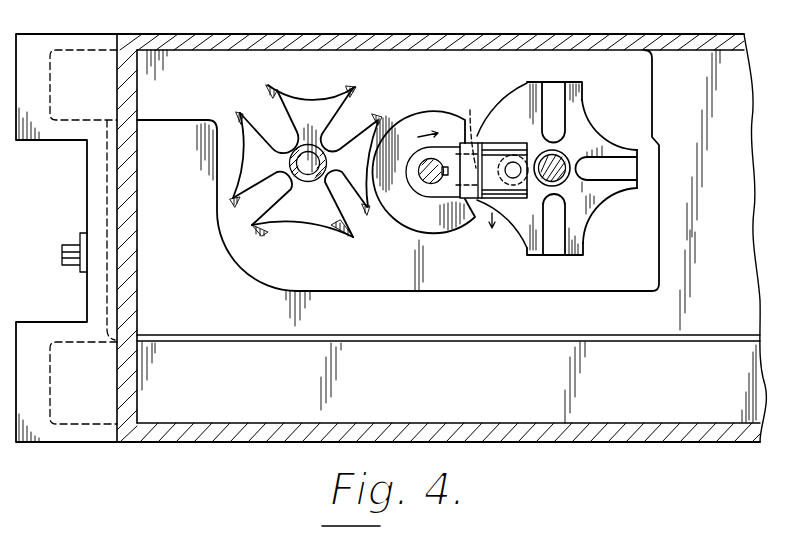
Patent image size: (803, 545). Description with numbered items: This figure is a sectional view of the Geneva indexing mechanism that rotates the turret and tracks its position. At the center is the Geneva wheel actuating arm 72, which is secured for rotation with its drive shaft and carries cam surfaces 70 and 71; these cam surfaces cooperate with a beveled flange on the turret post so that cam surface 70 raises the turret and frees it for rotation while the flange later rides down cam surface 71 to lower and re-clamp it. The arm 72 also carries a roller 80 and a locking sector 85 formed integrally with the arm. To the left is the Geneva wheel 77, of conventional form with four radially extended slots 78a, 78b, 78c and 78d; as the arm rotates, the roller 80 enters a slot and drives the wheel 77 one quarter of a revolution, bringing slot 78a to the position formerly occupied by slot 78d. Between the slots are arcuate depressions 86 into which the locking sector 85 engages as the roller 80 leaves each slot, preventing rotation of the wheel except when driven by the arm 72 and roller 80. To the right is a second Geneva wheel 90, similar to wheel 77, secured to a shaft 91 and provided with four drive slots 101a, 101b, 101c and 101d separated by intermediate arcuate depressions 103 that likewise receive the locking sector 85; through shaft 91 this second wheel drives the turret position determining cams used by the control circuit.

The cam surface 70 is at (507, 208).
The cam surface 71 is at (503, 147).
The Geneva wheel actuating arm 72 is at (476, 212).
The Geneva wheel 77 is at (273, 232).
The radially extended slot 78a is at (340, 200).
The radially extended slot 78b is at (281, 192).
The radially extended slot 78c is at (277, 126).
The radially extended slot 78d is at (341, 138).
The roller 80 is at (516, 197).
The locking sector 85 is at (432, 113).
The arcuate depressions 86 is at (238, 152).
The second Geneva wheel 90 is at (528, 90).
The shaft 91 is at (560, 157).
The drive slot 101a is at (547, 100).
The drive slot 101b is at (583, 178).
The drive slot 101c is at (557, 248).
The drive slot 101d is at (473, 128).
The intermediate arcuate depressions 103 is at (512, 114).